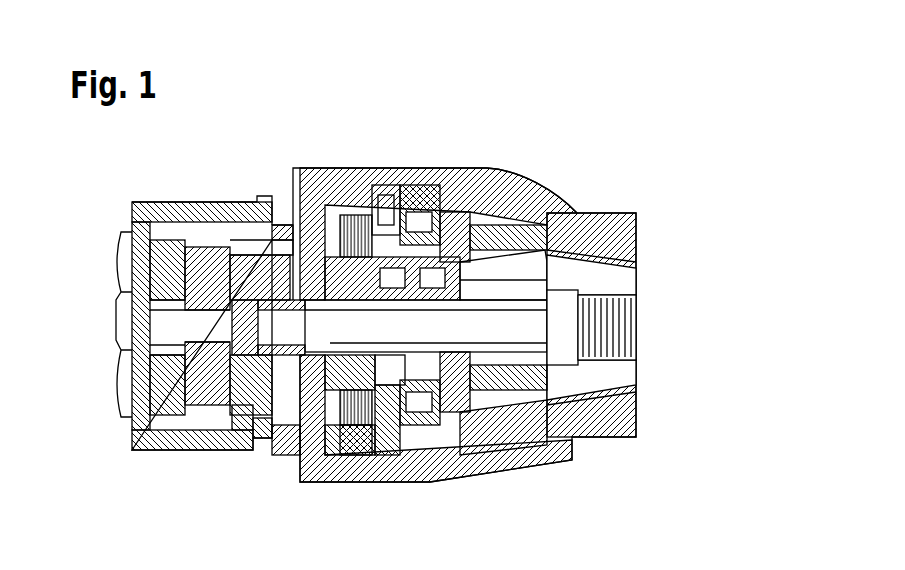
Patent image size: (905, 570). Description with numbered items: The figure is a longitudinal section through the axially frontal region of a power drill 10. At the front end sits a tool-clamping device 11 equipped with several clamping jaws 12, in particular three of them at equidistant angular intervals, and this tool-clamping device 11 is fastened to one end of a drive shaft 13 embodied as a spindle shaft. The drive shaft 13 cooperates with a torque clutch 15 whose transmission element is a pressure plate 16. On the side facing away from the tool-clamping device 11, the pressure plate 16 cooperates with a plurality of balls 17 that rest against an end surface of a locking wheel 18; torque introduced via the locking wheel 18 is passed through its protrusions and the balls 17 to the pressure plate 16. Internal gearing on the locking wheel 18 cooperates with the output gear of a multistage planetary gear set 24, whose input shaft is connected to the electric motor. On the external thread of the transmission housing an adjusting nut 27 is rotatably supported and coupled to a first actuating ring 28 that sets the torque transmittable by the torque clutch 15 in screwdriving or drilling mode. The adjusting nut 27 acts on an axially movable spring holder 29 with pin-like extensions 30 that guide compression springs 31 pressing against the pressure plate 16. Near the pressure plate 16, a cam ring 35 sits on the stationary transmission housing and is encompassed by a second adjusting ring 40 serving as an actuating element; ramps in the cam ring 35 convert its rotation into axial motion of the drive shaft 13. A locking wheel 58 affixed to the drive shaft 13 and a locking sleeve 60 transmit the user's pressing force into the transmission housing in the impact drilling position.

The power drill 10 is at (532, 110).
The tool-clamping device 11 is at (632, 246).
The clamping jaws 12 is at (641, 292).
The drive shaft 13 is at (507, 337).
The torque clutch 15 is at (298, 478).
The pressure plate 16 is at (326, 470).
The balls 17 is at (290, 215).
The locking wheel 18 is at (245, 450).
The multistage planetary gear set 24 is at (118, 348).
The adjusting nut 27 is at (446, 485).
The first actuating ring 28 is at (420, 480).
The spring holder 29 is at (445, 195).
The pin-like extensions 30 is at (415, 185).
The compression springs 31 is at (380, 185).
The cam ring 35 is at (336, 480).
The second adjusting ring 40 is at (345, 215).
The locking wheel 58 is at (510, 285).
The locking sleeve 60 is at (468, 270).